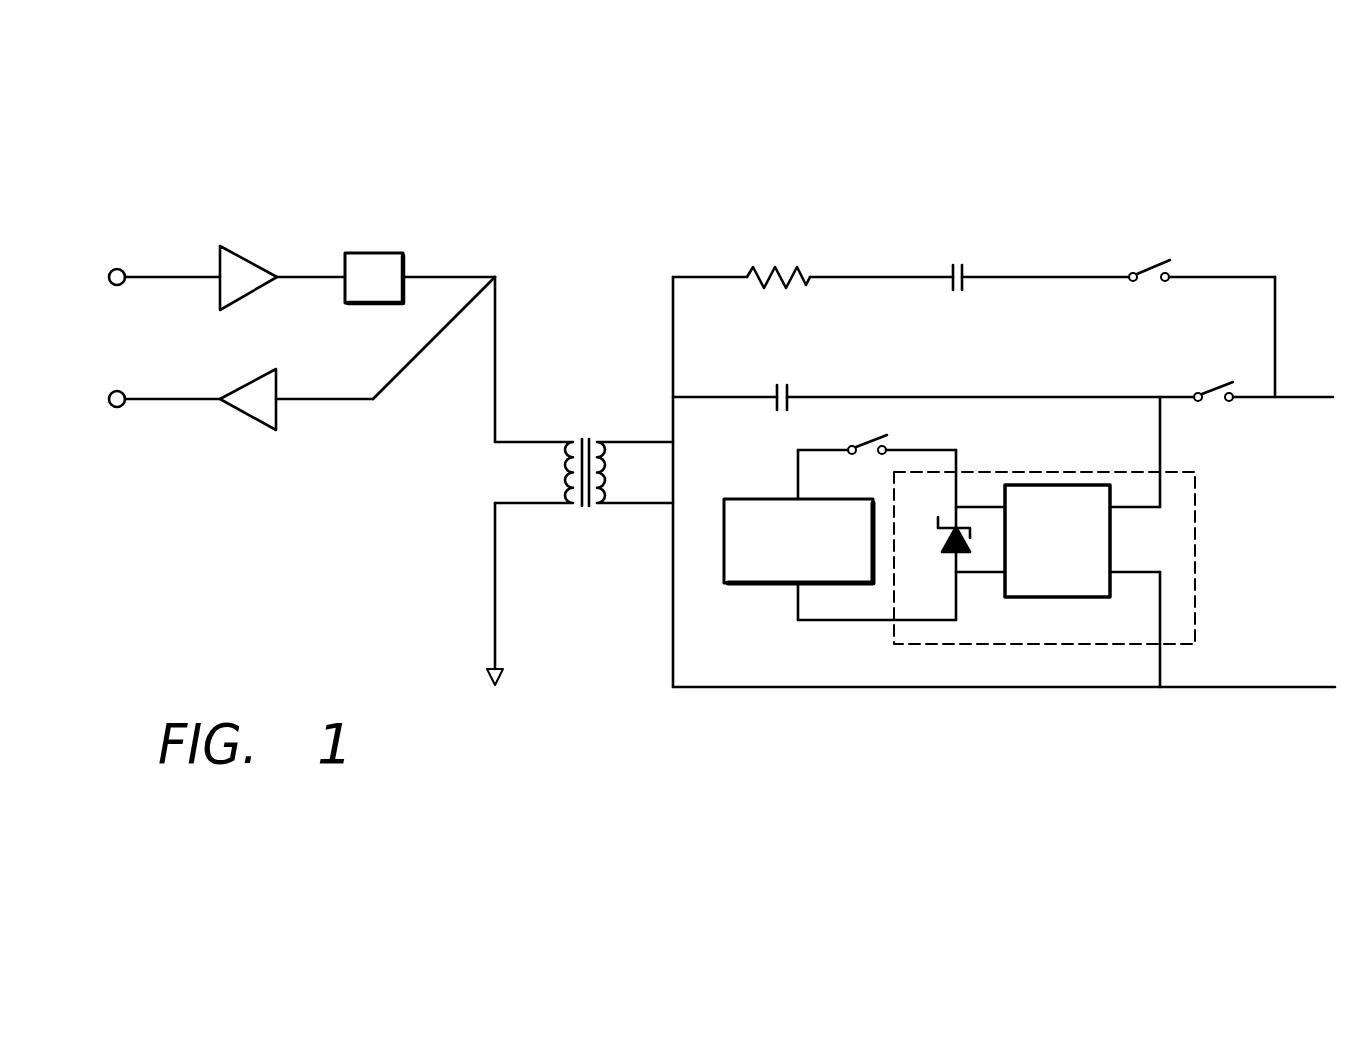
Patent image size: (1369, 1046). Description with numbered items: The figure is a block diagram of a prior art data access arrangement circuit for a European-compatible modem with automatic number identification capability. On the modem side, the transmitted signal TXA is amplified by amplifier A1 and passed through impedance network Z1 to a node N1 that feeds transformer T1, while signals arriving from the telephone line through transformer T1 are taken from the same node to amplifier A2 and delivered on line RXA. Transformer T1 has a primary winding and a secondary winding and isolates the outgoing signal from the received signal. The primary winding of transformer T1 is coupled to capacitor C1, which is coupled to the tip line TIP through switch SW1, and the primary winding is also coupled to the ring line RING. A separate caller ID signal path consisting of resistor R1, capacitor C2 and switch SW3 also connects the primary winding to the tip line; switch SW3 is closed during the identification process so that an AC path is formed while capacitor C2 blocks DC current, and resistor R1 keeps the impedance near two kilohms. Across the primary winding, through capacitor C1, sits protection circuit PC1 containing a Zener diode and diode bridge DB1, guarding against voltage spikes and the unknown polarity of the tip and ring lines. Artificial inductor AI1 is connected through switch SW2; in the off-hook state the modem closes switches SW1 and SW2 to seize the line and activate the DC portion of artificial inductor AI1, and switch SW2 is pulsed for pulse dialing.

The transmitted signal TXA is at (156, 261).
The received signal line RXA is at (153, 383).
The amplifier A1 is at (253, 262).
The amplifier A2 is at (247, 418).
The impedance network Z1 is at (657, 436).
The node N1 is at (497, 306).
The transformer T1 is at (584, 472).
The resistor R1 is at (813, 259).
The capacitor C1 is at (933, 380).
The capacitor C2 is at (1037, 260).
The switch SW1 is at (1263, 375).
The switch SW2 is at (877, 438).
The switch SW3 is at (1202, 313).
The tip line TIP is at (1326, 424).
The ring line RING is at (1014, 705).
The artificial inductor AI1 is at (767, 499).
The diode bridge DB1 is at (1062, 485).
The protection circuit PC1 is at (1195, 578).